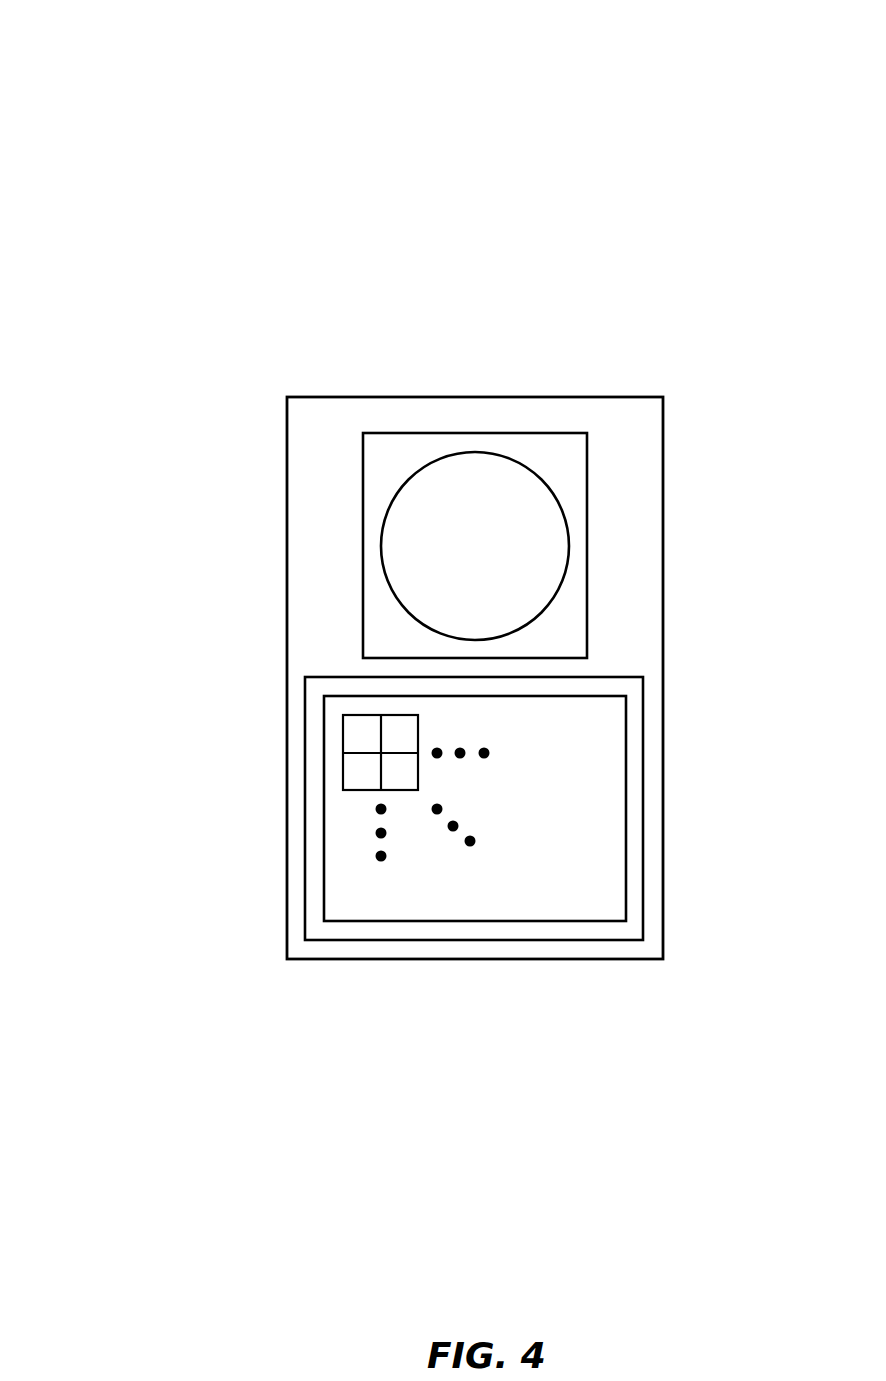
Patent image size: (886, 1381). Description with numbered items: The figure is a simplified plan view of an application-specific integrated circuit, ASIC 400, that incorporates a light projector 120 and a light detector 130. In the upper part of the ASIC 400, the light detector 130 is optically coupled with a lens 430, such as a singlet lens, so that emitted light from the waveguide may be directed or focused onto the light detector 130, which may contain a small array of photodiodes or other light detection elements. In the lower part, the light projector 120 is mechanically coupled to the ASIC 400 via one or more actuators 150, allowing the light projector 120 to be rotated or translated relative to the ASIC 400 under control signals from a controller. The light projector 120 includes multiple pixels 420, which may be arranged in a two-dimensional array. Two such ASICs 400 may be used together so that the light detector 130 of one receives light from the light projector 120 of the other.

The application-specific integrated circuit (ASIC) 400 is at (108, 100).
The lens 430 is at (473, 452).
The light detector 130 is at (587, 546).
The light projector 120 is at (626, 846).
The actuator 150 is at (305, 902).
The pixels 420 is at (343, 771).